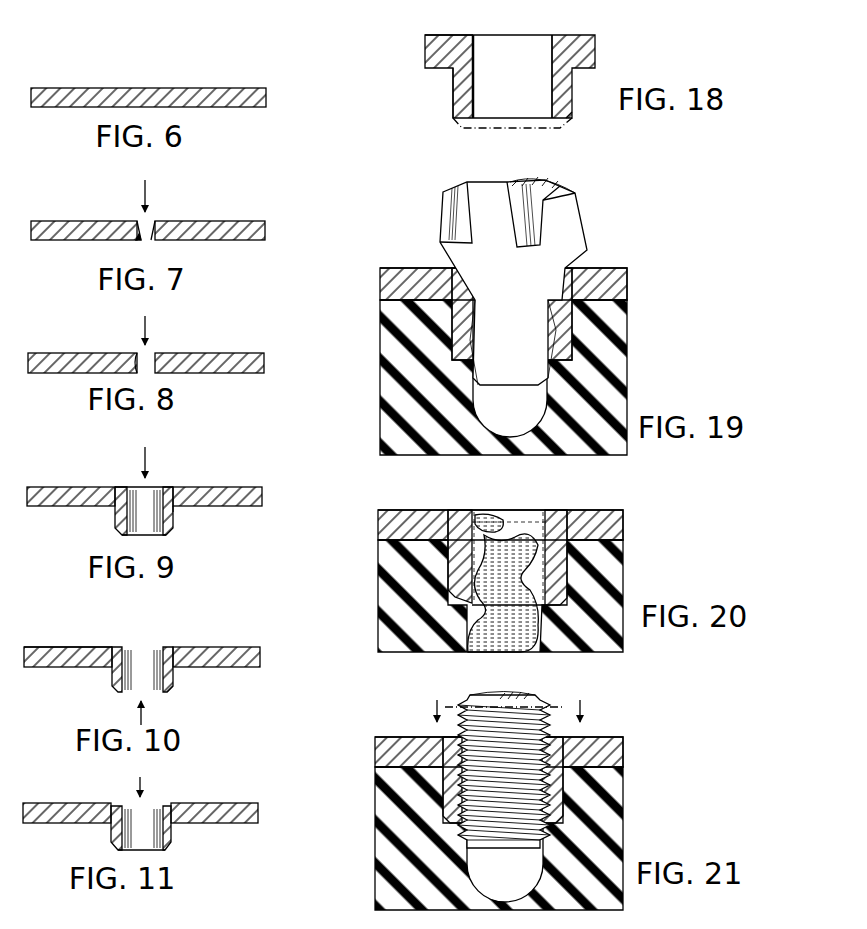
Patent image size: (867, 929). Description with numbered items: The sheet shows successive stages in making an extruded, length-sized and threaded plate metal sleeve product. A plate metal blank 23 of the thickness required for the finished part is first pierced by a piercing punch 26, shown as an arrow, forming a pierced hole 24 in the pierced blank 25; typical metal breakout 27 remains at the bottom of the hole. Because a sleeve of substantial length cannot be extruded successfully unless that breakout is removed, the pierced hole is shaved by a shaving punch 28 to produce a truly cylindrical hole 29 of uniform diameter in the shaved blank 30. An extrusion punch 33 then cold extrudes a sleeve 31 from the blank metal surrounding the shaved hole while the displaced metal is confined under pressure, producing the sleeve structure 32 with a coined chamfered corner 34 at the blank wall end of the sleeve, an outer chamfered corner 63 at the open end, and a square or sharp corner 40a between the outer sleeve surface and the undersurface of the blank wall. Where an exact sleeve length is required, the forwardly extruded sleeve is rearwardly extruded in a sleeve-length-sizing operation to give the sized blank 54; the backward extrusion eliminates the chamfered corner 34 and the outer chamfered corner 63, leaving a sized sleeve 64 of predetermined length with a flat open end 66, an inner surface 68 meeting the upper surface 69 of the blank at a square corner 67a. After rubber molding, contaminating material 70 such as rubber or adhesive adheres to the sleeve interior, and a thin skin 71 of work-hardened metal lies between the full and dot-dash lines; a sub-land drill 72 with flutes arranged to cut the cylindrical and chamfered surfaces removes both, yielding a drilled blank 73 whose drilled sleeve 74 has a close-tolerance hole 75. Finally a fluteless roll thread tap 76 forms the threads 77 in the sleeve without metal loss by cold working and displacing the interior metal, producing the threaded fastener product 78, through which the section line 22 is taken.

In FIG. 21, the section line 22 is at (507, 701).
In FIG. 6, the plate metal blank 23 is at (163, 98).
In FIG. 7, the pierced hole 24 is at (149, 222).
In FIG. 7, the pierced blank 25 is at (250, 231).
In FIG. 7, the piercing punch 26 is at (141, 187).
In FIG. 7, the metal breakout 27 is at (141, 242).
In FIG. 8, the shaving punch 28 is at (146, 321).
In FIG. 8, the shaved hole 29 is at (135, 356).
In FIG. 8, the shaved blank 30 is at (240, 364).
In FIG. 9, the sleeve 31 is at (115, 518).
In FIG. 20, the sleeve 31 is at (456, 570).
In FIG. 9, the sleeve structure 32 is at (245, 501).
In FIG. 20, the sleeve structure 32 is at (604, 528).
In FIG. 9, the extrusion punch 33 is at (142, 451).
In FIG. 9, the chamfered corner 34 is at (175, 490).
In FIG. 18, the chamfered corner 34 is at (455, 42).
In FIG. 20, the chamfered corner 34 is at (549, 520).
In FIG. 9, the square corner 40a is at (174, 509).
In FIG. 10, the sized blank 54 is at (205, 648).
In FIG. 18, the sized blank 54 is at (580, 50).
In FIG. 9, the outer chamfered corner 63 is at (170, 535).
In FIG. 11, the outer chamfered corner 63 is at (168, 851).
In FIG. 18, the outer chamfered corner 63 is at (565, 128).
In FIG. 19, the outer chamfered corner 63 is at (563, 362).
In FIG. 20, the outer chamfered corner 63 is at (560, 602).
In FIG. 21, the outer chamfered corner 63 is at (548, 826).
In FIG. 10, the sized sleeve 64 is at (113, 678).
In FIG. 18, the sized sleeve 64 is at (456, 97).
In FIG. 10, the flat open end 66 is at (169, 693).
In FIG. 18, the flat open end 66 is at (566, 114).
In FIG. 10, the square corner 67a is at (160, 649).
In FIG. 18, the square corner 67a is at (552, 40).
In FIG. 10, the inner surface 68 is at (122, 666).
In FIG. 18, the inner surface 68 is at (477, 68).
In FIG. 10, the upper surface 69 is at (52, 649).
In FIG. 20, the contaminating material 70 is at (478, 506).
In FIG. 20, the thin skin of work-hardened metal 71 is at (567, 545).
In FIG. 19, the sub-land drill 72 is at (572, 226).
In FIG. 11, the drilled blank 73 is at (225, 808).
In FIG. 19, the drilled blank 73 is at (600, 288).
In FIG. 11, the drilled sleeve 74 is at (171, 838).
In FIG. 19, the drilled sleeve 74 is at (556, 328).
In FIG. 21, the drilled sleeve 74 is at (456, 790).
In FIG. 11, the hole 75 is at (112, 835).
In FIG. 19, the hole 75 is at (455, 320).
In FIG. 21, the fluteless roll thread tap 76 is at (498, 797).
In FIG. 21, the threads 77 is at (549, 779).
In FIG. 21, the threaded fastener product 78 is at (619, 749).